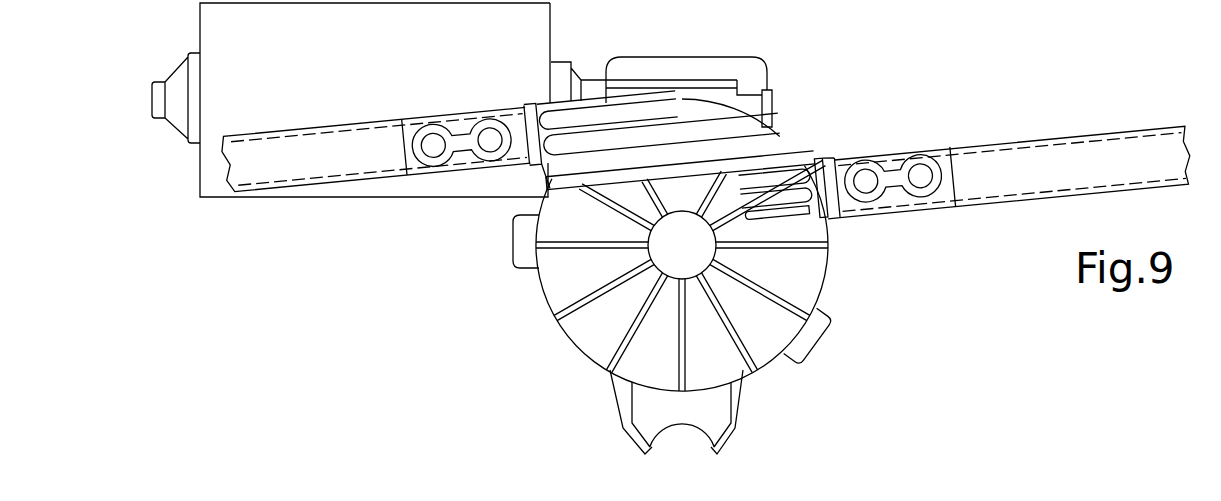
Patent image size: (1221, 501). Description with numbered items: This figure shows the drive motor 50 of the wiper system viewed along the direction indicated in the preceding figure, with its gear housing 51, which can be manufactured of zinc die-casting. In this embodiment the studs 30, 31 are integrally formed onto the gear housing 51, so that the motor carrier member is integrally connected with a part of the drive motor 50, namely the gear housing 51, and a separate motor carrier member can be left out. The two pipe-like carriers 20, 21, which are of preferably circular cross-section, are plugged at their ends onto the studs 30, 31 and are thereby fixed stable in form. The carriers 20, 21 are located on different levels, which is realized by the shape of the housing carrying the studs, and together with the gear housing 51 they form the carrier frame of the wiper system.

The drive motor 50 is at (318, 78).
The pipe-like carrier 20 is at (314, 167).
The pipe-like carrier 21 is at (1072, 148).
The stud 30 is at (466, 162).
The stud 31 is at (894, 163).
The gear housing 51 is at (805, 282).